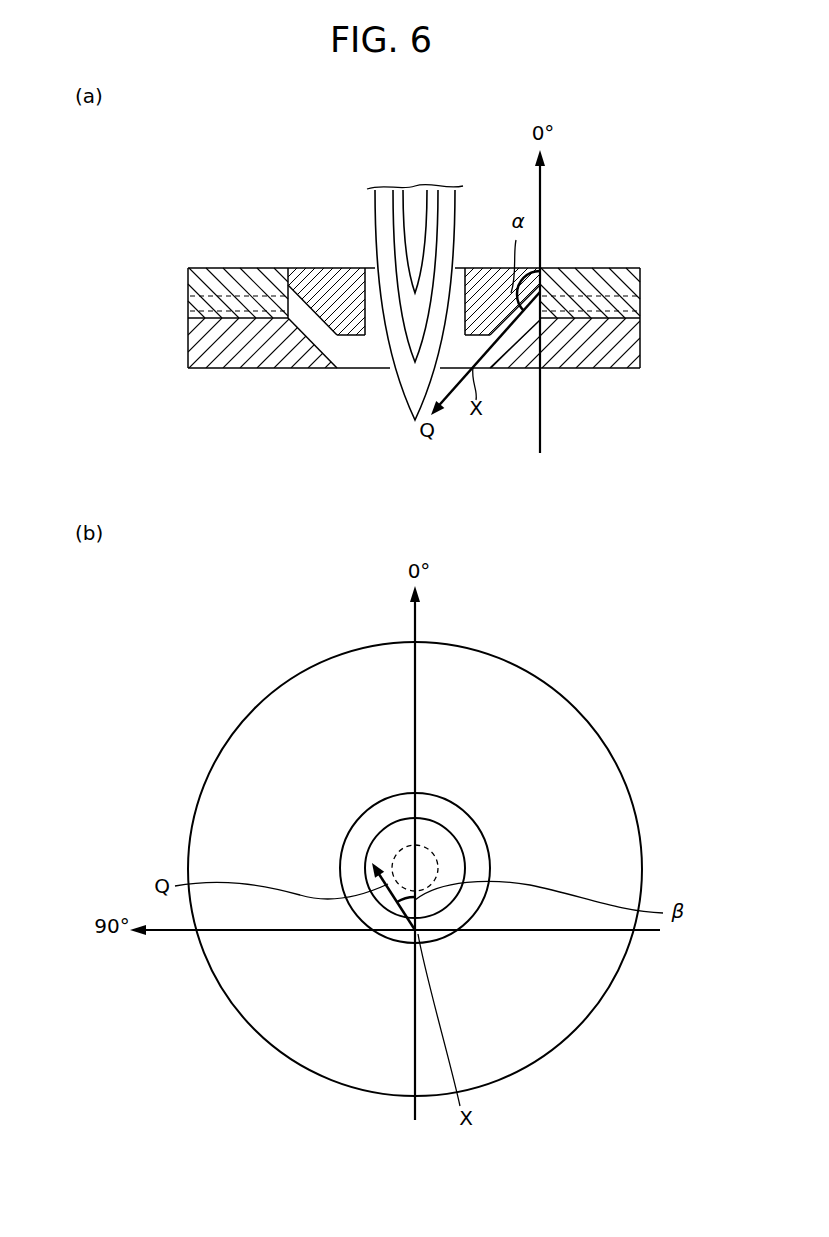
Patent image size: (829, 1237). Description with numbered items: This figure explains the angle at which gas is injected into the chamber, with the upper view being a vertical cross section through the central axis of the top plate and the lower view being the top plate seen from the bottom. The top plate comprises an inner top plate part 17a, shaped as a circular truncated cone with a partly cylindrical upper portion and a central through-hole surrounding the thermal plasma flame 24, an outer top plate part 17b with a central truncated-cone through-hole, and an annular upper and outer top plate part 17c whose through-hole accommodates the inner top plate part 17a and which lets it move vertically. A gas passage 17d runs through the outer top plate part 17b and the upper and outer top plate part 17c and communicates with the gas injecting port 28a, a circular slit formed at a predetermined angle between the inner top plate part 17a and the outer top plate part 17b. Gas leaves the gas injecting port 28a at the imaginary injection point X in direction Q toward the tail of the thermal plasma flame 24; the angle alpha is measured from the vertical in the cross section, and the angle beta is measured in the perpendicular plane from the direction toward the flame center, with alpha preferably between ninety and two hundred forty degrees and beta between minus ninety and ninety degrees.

The thermal plasma flame 24 is at (372, 208).
The inner top plate part 17a is at (316, 278).
The outer top plate part 17b is at (247, 362).
The upper and outer top plate part 17c is at (257, 278).
The gas passage 17d is at (212, 293).
The gas injecting port 28a is at (317, 357).